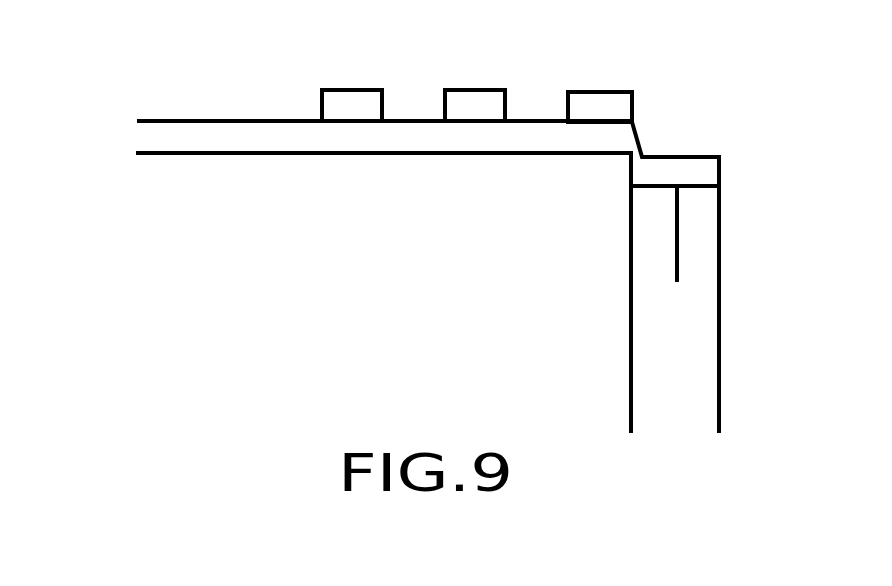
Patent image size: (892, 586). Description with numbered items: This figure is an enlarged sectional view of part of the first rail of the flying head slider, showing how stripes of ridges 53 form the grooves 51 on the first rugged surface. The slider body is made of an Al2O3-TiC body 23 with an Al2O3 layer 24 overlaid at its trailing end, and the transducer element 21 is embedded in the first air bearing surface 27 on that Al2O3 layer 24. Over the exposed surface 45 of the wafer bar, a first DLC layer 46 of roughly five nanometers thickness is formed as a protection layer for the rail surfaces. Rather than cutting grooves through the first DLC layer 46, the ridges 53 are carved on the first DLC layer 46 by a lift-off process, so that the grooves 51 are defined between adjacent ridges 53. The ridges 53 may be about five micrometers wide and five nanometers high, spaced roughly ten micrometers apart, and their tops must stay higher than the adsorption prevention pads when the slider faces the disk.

The transducer element 21 is at (682, 228).
The Al2O3-TiC body 23 is at (608, 380).
The Al2O3 layer 24 is at (702, 325).
The first air bearing surface 27 is at (147, 119).
The exposed surface 45 is at (137, 153).
The first DLC layer 46 is at (195, 133).
The grooves 51 is at (385, 100).
The ridges 53 is at (332, 88).